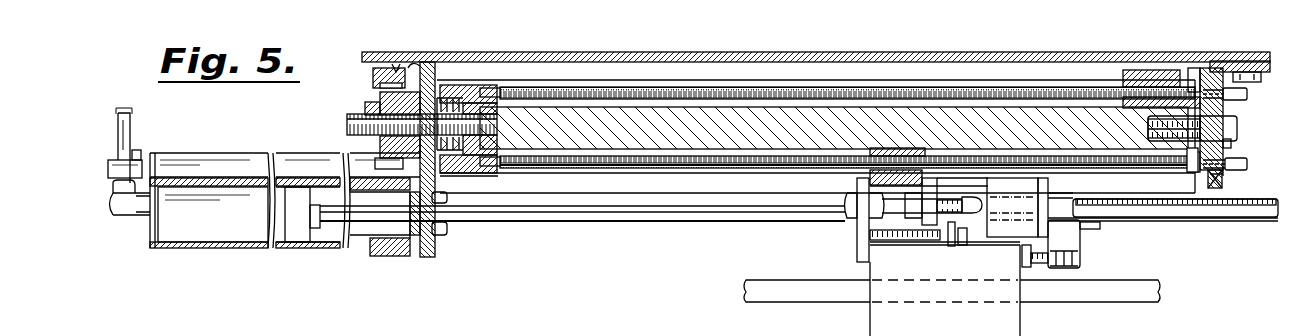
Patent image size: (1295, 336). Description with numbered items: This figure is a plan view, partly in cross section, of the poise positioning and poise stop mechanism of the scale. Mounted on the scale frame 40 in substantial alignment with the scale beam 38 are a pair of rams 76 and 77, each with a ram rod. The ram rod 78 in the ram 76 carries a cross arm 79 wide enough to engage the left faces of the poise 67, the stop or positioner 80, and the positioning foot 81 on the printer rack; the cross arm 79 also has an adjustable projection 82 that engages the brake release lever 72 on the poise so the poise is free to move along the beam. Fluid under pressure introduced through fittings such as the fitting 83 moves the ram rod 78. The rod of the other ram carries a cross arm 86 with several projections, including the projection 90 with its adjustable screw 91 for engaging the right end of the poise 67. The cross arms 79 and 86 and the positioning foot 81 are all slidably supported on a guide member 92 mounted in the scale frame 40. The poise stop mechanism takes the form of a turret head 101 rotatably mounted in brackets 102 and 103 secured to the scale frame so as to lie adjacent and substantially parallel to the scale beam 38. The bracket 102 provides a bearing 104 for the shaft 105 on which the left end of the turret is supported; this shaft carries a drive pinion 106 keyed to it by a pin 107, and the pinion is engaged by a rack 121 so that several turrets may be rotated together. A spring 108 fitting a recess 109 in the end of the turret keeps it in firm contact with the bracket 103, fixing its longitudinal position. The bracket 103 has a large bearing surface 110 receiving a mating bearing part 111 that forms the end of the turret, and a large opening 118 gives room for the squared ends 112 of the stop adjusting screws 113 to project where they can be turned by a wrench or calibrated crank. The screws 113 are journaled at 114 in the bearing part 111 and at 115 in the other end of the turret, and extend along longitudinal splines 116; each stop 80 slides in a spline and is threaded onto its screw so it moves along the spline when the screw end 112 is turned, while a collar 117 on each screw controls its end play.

The scale frame 40 is at (692, 52).
The turret head 101 is at (788, 80).
The stop adjusting screws 113 is at (676, 88).
The longitudinal splines 116 is at (956, 86).
The bracket 102 is at (411, 62).
The drive pinion 106 is at (373, 75).
The rack 121 is at (396, 70).
The pin 107 is at (410, 122).
The shaft 105 is at (349, 127).
The bearing 104 is at (380, 147).
The recess 109 is at (449, 95).
The spring 108 is at (453, 94).
The journal 115 is at (494, 175).
The stop 80 is at (1163, 70).
The collar 117 is at (1201, 66).
The large opening 118 is at (1235, 129).
The squared ends 112 is at (1247, 96).
The bearing part 111 is at (1231, 153).
The bearing surface 110 is at (1224, 170).
The journal 114 is at (1200, 178).
The bracket 103 is at (1223, 187).
The ram 77 is at (286, 160).
The ram 76 is at (286, 249).
The fitting 83 is at (128, 222).
The ram rod 78 is at (529, 222).
The cross arm 79 is at (858, 242).
The positioning foot 81 is at (929, 201).
The adjustable projection 82 is at (905, 243).
The brake release lever 72 is at (953, 248).
The cross arm 86 is at (1024, 236).
The projection 90 is at (1080, 248).
The adjustable screw 91 is at (1026, 270).
The guide member 92 is at (1203, 220).
The poise 67 is at (920, 332).
The scale beam 38 is at (1102, 300).